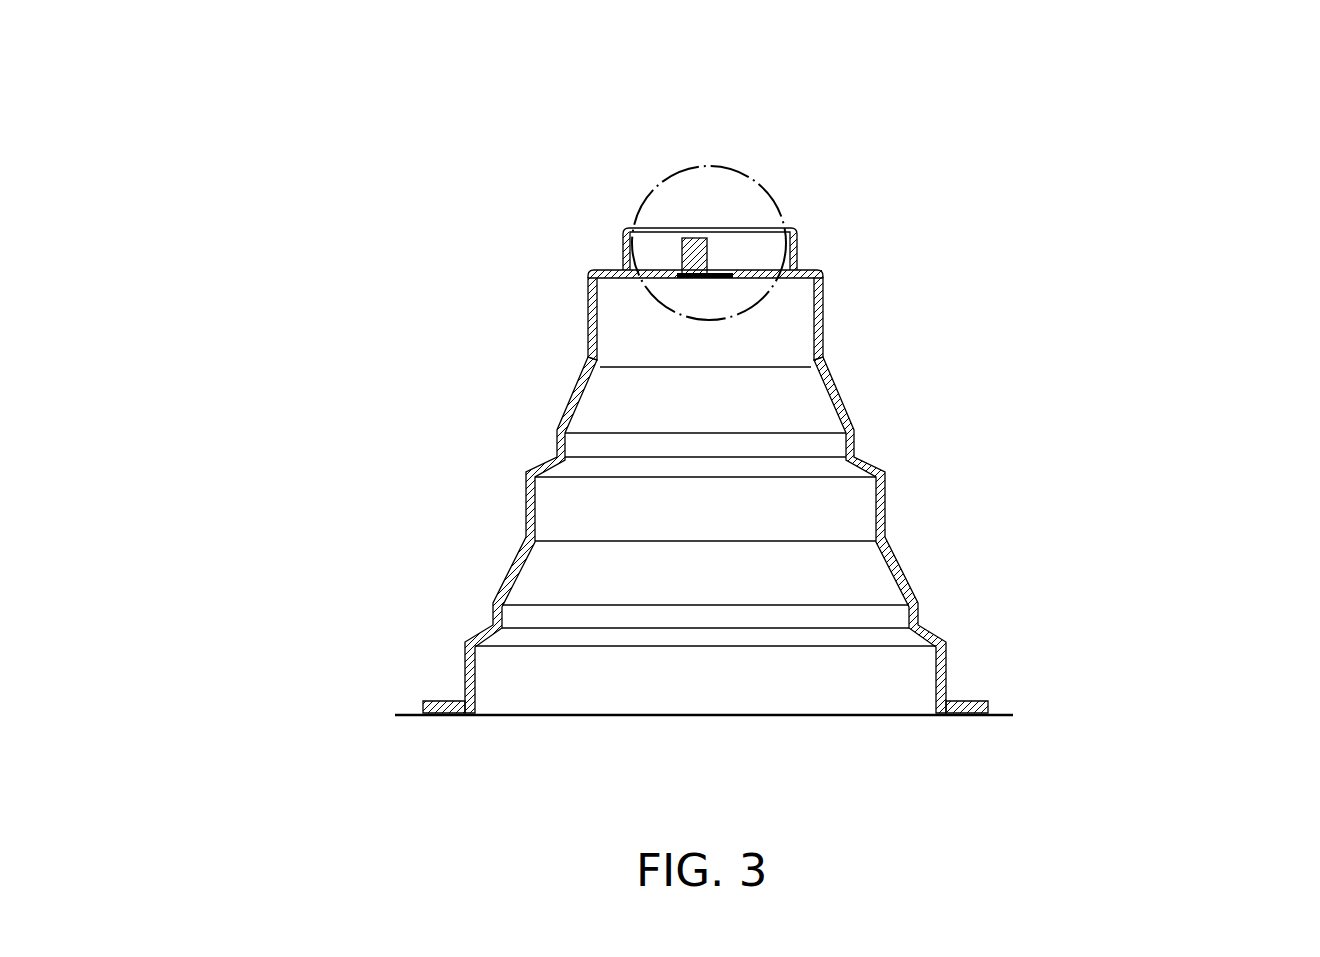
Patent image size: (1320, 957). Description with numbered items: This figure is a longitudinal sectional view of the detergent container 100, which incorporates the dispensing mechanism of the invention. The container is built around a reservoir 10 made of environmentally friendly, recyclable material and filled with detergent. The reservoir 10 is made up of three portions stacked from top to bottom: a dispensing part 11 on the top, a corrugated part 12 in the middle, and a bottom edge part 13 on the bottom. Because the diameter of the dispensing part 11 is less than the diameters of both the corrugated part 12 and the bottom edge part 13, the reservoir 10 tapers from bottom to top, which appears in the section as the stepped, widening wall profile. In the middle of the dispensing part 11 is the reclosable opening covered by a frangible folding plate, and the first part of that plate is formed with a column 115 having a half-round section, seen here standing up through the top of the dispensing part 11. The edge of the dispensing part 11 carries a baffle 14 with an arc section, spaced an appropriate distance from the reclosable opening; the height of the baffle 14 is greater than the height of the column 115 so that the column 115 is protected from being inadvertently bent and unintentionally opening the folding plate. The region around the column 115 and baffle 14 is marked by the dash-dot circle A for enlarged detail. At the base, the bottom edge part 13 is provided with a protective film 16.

The detergent container 100 is at (347, 116).
The reservoir 10 is at (1120, 272).
The dispensing part 11 is at (755, 268).
The corrugated part 12 is at (877, 463).
The bottom edge part 13 is at (970, 700).
The baffle 14 is at (793, 252).
The column 115 is at (683, 250).
The protective film 16 is at (1003, 713).
The enlarged detail region A is at (757, 181).